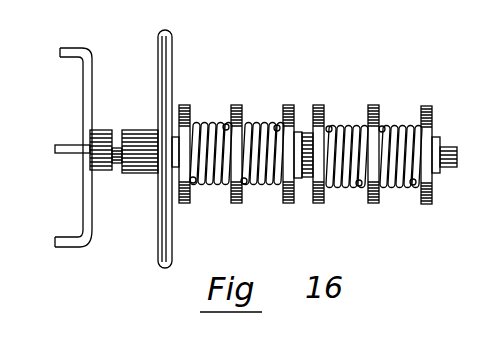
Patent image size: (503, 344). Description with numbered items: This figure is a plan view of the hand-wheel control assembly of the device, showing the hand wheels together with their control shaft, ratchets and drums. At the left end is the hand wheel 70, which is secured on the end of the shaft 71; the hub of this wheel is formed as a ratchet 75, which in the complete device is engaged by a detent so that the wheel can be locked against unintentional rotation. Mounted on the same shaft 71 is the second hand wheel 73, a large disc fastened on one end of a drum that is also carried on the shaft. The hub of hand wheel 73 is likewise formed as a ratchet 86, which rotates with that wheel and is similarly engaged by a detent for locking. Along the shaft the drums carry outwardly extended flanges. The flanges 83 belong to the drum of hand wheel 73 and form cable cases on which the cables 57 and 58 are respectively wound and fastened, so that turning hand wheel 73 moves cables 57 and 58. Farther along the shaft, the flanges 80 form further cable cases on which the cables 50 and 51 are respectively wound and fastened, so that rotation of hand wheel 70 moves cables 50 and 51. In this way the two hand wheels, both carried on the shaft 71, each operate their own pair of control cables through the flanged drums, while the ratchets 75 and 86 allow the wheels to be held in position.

The hand wheel 70 is at (67, 59).
The ratchet 75 is at (100, 130).
The ratchet 86 is at (138, 130).
The hand wheel 73 is at (171, 67).
The outwardly extended flanges 83 is at (288, 105).
The cable 57 is at (226, 124).
The cable 58 is at (277, 125).
The outwardly extended flanges 80 is at (427, 106).
The cable 50 is at (330, 126).
The cable 51 is at (383, 126).
The shaft 71 is at (457, 155).